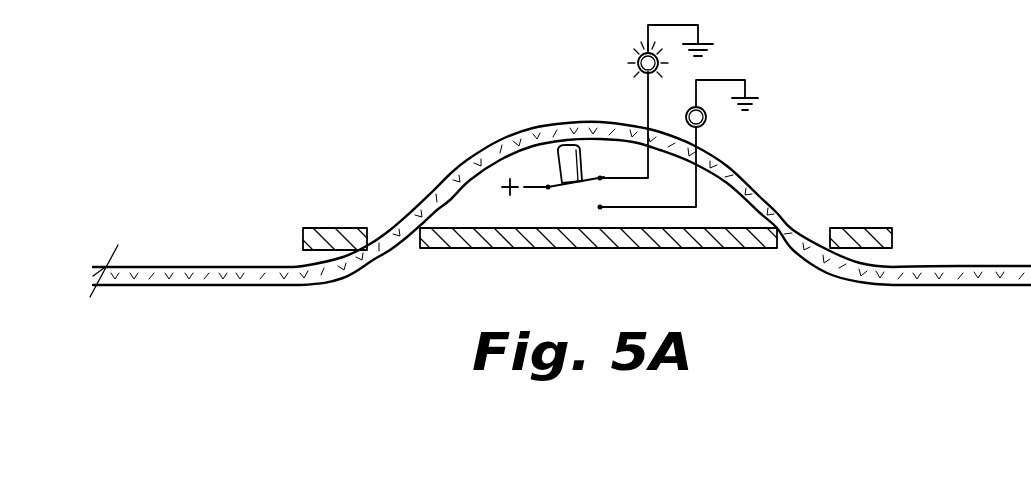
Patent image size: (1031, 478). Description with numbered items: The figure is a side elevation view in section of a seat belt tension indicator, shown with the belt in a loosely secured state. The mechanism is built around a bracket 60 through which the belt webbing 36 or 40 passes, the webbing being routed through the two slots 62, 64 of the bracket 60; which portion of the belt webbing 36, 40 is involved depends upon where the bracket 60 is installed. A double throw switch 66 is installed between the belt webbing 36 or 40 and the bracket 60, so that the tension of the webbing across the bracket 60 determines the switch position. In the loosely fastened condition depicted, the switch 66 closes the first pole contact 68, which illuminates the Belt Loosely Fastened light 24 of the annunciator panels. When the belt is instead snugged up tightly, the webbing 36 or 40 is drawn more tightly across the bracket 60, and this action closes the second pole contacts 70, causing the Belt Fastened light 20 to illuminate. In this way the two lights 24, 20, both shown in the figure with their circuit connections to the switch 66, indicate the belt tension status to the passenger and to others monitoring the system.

The belt webbing 36 is at (198, 268).
The belt webbing 40 is at (567, 203).
The slot 62 is at (377, 229).
The bracket 60 is at (480, 250).
The slot 64 is at (787, 252).
The double throw switch 66 is at (556, 180).
The first pole contact 68 is at (597, 170).
The second pole contacts 70 is at (600, 211).
The Belt Loosely Fastened light 24 is at (638, 61).
The Belt Fastened light 20 is at (706, 118).